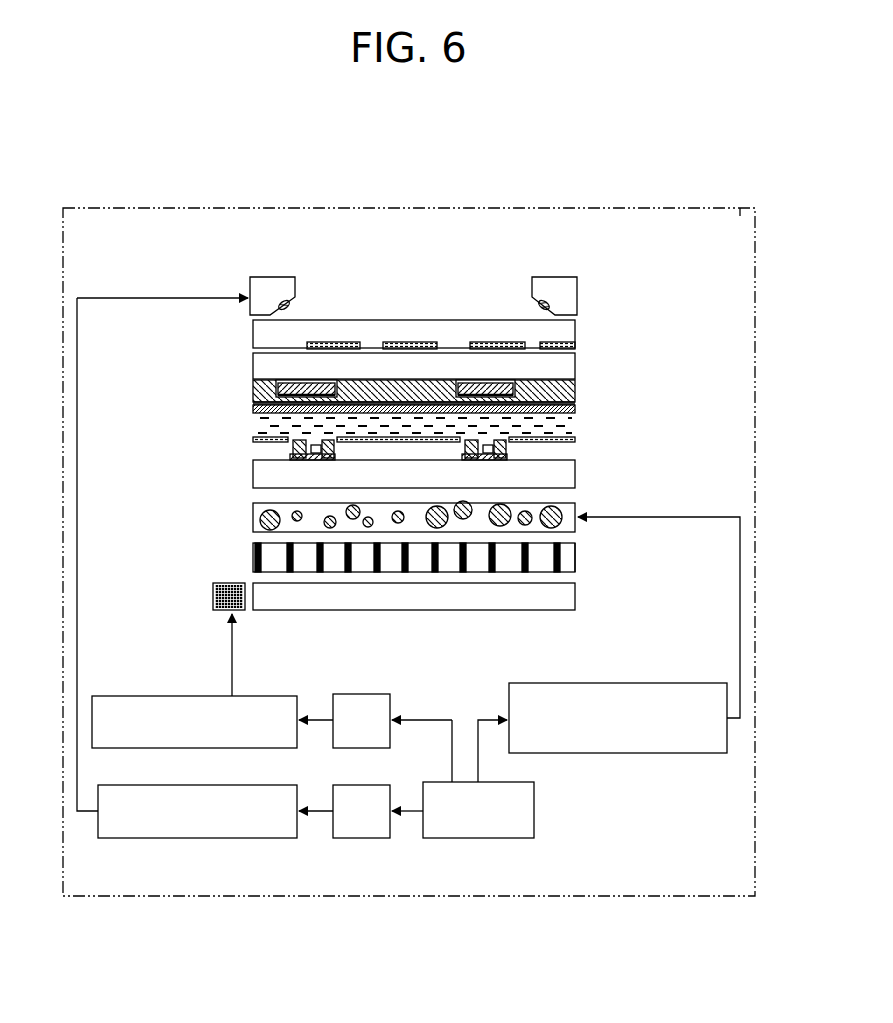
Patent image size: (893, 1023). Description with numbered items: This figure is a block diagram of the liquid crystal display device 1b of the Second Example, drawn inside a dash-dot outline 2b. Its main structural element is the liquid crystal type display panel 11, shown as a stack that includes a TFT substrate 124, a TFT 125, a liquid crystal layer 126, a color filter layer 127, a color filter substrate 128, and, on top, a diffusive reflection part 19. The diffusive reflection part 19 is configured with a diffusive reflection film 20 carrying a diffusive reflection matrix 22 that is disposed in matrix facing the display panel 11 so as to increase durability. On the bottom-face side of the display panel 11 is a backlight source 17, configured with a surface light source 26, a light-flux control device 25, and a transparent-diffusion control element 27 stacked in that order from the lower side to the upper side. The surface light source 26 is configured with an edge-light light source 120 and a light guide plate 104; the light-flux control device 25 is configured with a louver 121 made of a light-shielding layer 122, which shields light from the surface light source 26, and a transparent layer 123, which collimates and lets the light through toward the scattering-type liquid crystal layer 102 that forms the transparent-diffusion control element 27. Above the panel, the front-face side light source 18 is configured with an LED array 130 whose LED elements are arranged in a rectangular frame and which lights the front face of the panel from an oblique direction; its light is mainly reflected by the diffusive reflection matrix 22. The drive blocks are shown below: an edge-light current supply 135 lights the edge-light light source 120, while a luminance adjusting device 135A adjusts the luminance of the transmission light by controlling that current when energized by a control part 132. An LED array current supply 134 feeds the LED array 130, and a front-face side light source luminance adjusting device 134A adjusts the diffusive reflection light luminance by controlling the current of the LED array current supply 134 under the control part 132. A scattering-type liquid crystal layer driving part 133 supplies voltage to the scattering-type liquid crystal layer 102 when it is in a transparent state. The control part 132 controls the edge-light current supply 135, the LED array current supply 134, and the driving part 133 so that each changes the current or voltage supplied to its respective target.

The liquid crystal display device 1b is at (112, 196).
The housing 2b is at (755, 228).
The diffusive reflection part 19 is at (460, 278).
The diffusive reflection film 20 is at (372, 340).
The diffusive reflection matrix 22 is at (437, 345).
The LED array 130 is at (292, 300).
The front-face side light source 18 is at (595, 262).
The color filter substrate 128 is at (575, 372).
The color filter layer 127 is at (575, 398).
The liquid crystal layer 126 is at (575, 428).
The TFT 125 is at (295, 452).
The TFT substrate 124 is at (575, 475).
The liquid crystal type display panel 11 is at (655, 362).
The scattering-type liquid crystal layer 102 is at (577, 512).
The transparent-diffusion control element 27 is at (210, 505).
The light-flux control device 25 is at (210, 545).
The surface light source 26 is at (210, 585).
The light-shielding layer 122 is at (427, 563).
The transparent layer 123 is at (485, 561).
The louver 121 is at (577, 556).
The edge-light light source 120 is at (240, 612).
The light guide plate 104 is at (340, 610).
The backlight source 17 is at (655, 500).
The edge-light current supply 135 is at (195, 696).
The luminance adjusting device 135A is at (392, 698).
The scattering-type liquid crystal layer driving part 133 is at (693, 753).
The LED array current supply 134 is at (248, 838).
The front-face side light source luminance adjusting device 134A is at (355, 838).
The control part 132 is at (534, 812).